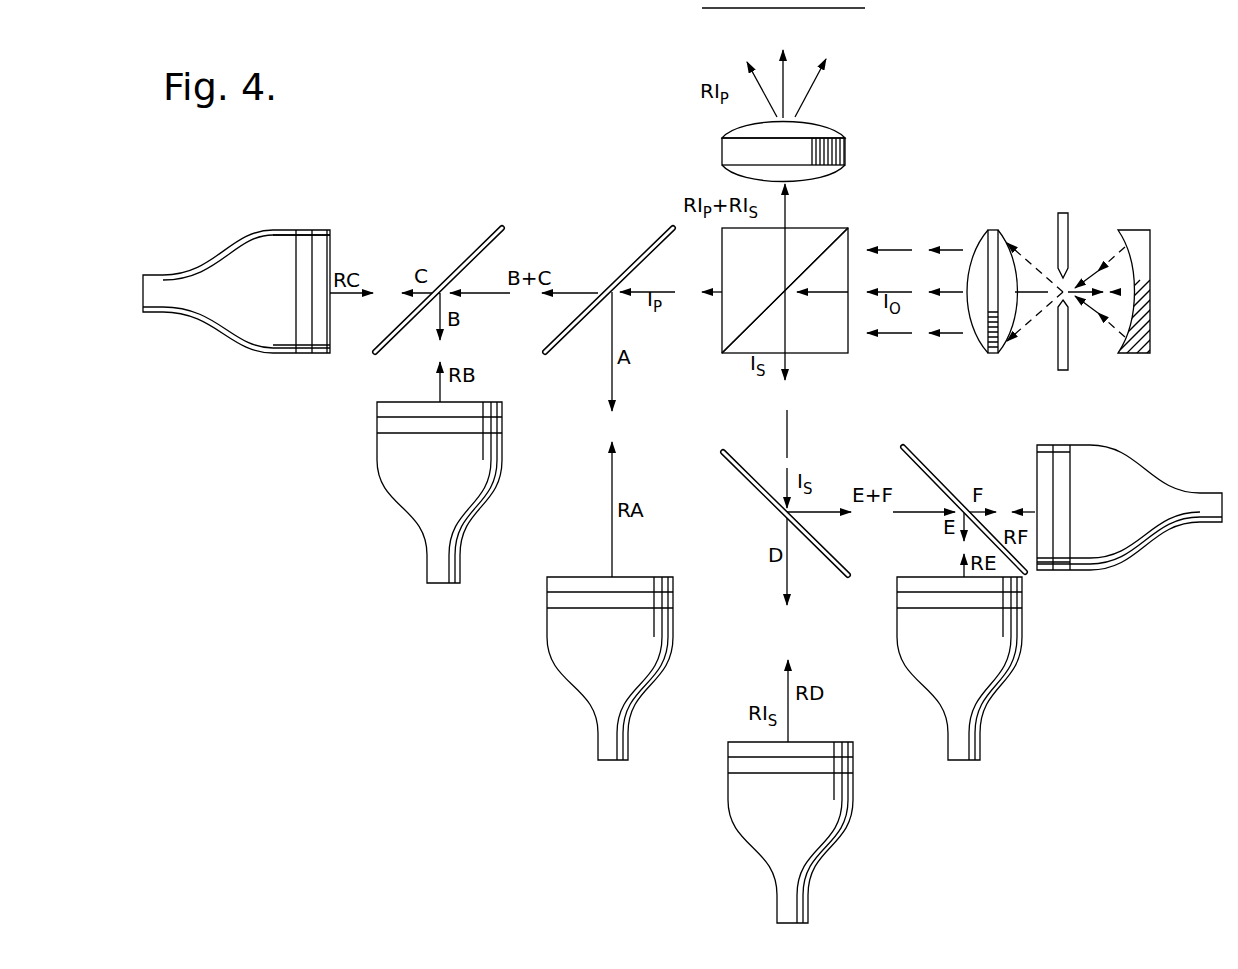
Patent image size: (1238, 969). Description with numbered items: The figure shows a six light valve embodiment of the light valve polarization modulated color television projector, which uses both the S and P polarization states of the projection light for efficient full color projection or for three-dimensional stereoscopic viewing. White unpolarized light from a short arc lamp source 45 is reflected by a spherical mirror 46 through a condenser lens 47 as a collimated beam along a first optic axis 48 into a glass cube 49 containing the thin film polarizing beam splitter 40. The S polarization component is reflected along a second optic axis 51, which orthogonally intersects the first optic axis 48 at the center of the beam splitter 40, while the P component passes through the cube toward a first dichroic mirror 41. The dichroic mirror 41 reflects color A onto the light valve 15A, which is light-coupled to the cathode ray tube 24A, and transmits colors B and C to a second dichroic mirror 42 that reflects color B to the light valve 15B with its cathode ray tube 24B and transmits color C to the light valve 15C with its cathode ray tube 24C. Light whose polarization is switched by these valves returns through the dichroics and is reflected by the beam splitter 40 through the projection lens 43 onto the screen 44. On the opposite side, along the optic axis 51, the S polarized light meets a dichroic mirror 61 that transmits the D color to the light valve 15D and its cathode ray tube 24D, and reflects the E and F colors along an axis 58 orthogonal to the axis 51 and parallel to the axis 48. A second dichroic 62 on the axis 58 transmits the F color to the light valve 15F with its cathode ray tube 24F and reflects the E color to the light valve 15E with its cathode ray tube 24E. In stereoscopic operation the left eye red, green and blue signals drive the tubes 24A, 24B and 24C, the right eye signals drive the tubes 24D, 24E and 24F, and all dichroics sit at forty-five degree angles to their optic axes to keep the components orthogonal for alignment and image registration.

The cathode ray tube 24A is at (638, 668).
The light valve 15A is at (652, 595).
The cathode ray tube 24B is at (410, 495).
The light valve 15B is at (412, 413).
The cathode ray tube 24C is at (272, 232).
The light valve 15C is at (318, 323).
The cathode ray tube 24D is at (763, 845).
The light valve 15D is at (835, 765).
The cathode ray tube 24E is at (1000, 680).
The light valve 15E is at (1005, 595).
The cathode ray tube 24F is at (1145, 482).
The light valve 15F is at (1055, 467).
The polarizing beam splitter 40 is at (832, 243).
The glass cube 49 is at (764, 262).
The first dichroic mirror 41 is at (668, 230).
The dichroic mirror 42 is at (503, 230).
The projection lens 43 is at (845, 148).
The screen 44 is at (850, 10).
The arc lamp source 45 is at (1066, 225).
The spherical mirror 46 is at (1140, 232).
The condenser lens 47 is at (990, 232).
The first optic axis 48 is at (1038, 293).
The second optic axis 51 is at (790, 420).
The axis 58 is at (912, 517).
The dichroic mirror 61 is at (742, 468).
The second dichroic 62 is at (928, 465).